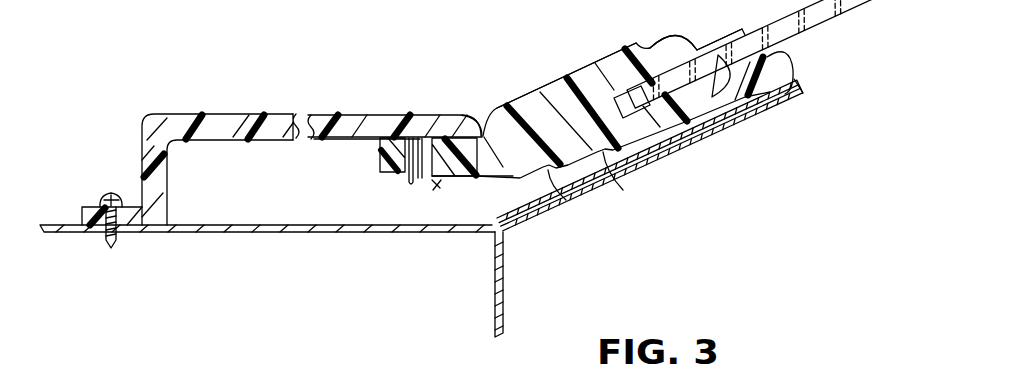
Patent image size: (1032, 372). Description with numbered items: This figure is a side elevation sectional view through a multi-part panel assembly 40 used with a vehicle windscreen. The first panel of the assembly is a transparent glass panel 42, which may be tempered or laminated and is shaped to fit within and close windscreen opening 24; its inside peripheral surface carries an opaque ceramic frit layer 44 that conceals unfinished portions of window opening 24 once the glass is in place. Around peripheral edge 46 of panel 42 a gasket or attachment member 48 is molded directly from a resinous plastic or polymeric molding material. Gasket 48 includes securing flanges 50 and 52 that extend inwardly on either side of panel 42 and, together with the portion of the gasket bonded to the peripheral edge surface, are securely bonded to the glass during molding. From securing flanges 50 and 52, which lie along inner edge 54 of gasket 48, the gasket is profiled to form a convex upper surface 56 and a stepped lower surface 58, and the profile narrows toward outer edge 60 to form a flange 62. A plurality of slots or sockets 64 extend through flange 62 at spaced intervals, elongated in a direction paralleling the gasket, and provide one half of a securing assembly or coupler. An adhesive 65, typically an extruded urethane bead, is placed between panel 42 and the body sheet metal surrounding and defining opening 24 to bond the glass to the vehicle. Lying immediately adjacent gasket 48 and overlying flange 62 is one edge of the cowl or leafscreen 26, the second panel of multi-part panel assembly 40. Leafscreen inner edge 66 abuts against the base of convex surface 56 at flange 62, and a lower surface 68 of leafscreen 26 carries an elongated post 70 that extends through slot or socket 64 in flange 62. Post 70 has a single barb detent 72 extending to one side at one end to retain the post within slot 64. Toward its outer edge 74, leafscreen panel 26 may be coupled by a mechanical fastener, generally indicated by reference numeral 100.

The windscreen opening 24 is at (672, 153).
The cowl or leafscreen 26 is at (331, 87).
The multi-part panel assembly 40 is at (432, 56).
The glass panel 42 is at (862, 1).
The opaque ceramic frit layer 44 is at (786, 43).
The peripheral edge 46 is at (623, 96).
The gasket or attachment member 48 is at (579, 43).
The securing flange 50 is at (645, 46).
The securing flange 52 is at (727, 128).
The inner edge 54 is at (695, 53).
The convex upper surface 56 is at (556, 83).
The stepped lower surface 58 is at (623, 190).
The outer edge 60 is at (566, 200).
The flange 62 is at (481, 158).
The slot or socket 64 is at (424, 137).
The adhesive 65 is at (787, 91).
The leafscreen inner edge 66 is at (470, 119).
The lower surface 68 is at (325, 140).
The elongated post 70 is at (413, 160).
The barb detent 72 is at (435, 184).
The outer edge 74 is at (187, 108).
The mechanical fastener 100 is at (121, 187).